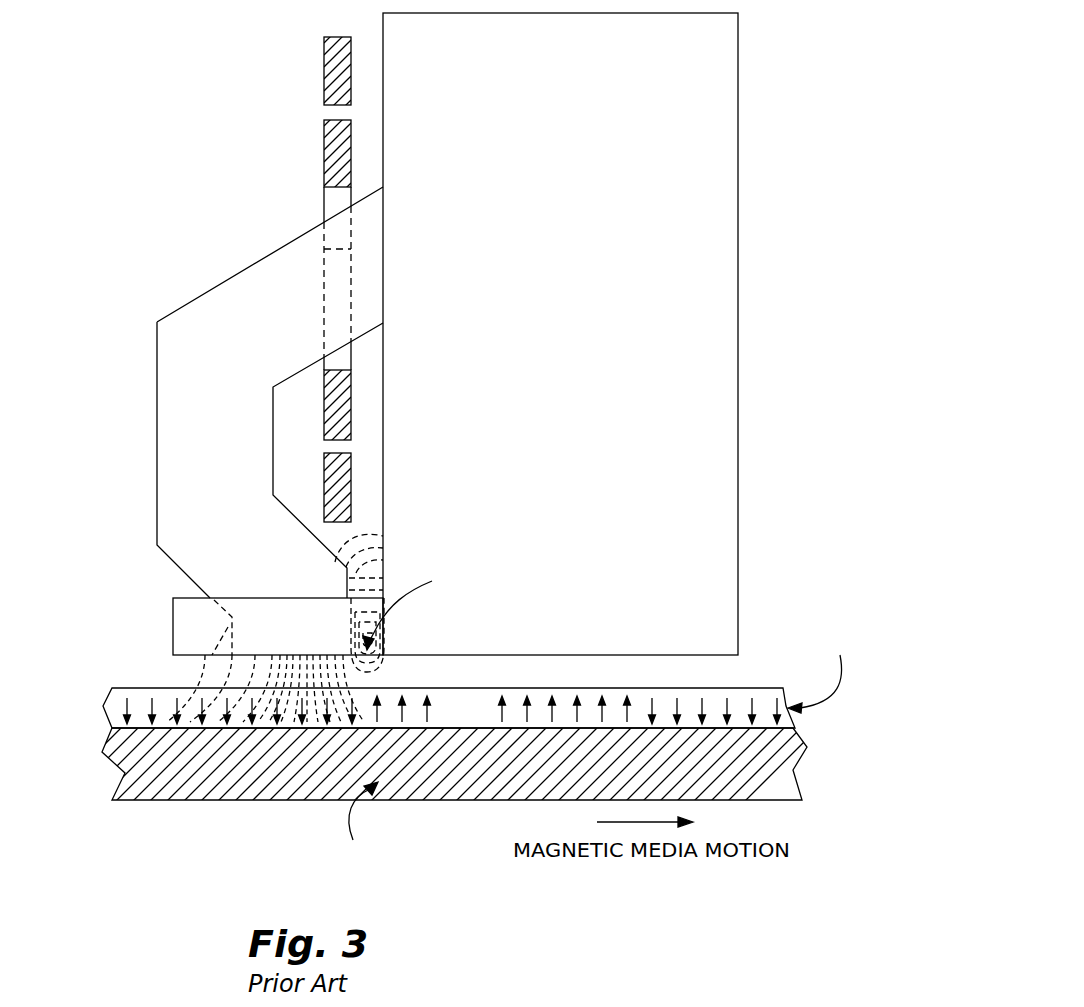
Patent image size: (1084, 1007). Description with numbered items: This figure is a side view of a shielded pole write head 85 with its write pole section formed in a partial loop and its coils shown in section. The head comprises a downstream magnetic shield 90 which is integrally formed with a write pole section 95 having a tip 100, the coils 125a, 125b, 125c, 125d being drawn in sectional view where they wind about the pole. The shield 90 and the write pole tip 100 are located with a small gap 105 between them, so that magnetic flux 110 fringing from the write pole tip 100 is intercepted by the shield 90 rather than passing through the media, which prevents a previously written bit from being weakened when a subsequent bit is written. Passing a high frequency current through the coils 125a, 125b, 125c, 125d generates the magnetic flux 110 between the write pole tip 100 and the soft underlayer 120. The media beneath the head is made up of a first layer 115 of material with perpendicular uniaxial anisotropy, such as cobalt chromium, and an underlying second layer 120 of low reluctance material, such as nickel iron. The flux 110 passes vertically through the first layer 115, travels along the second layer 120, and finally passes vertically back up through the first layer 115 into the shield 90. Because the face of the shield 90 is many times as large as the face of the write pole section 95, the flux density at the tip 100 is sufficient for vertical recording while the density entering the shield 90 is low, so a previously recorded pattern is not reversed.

The shielded pole write head 85 is at (268, 210).
The downstream magnetic shield 90 is at (576, 279).
The write pole section 95 is at (216, 415).
The write pole tip 100 is at (293, 627).
The gap 105 is at (363, 573).
The magnetic flux 110 is at (253, 675).
The first layer 115 is at (480, 721).
The soft underlayer 120 is at (288, 755).
The coil 125a is at (324, 60).
The coil 125b is at (328, 143).
The coil 125c is at (338, 410).
The coil 125d is at (342, 486).